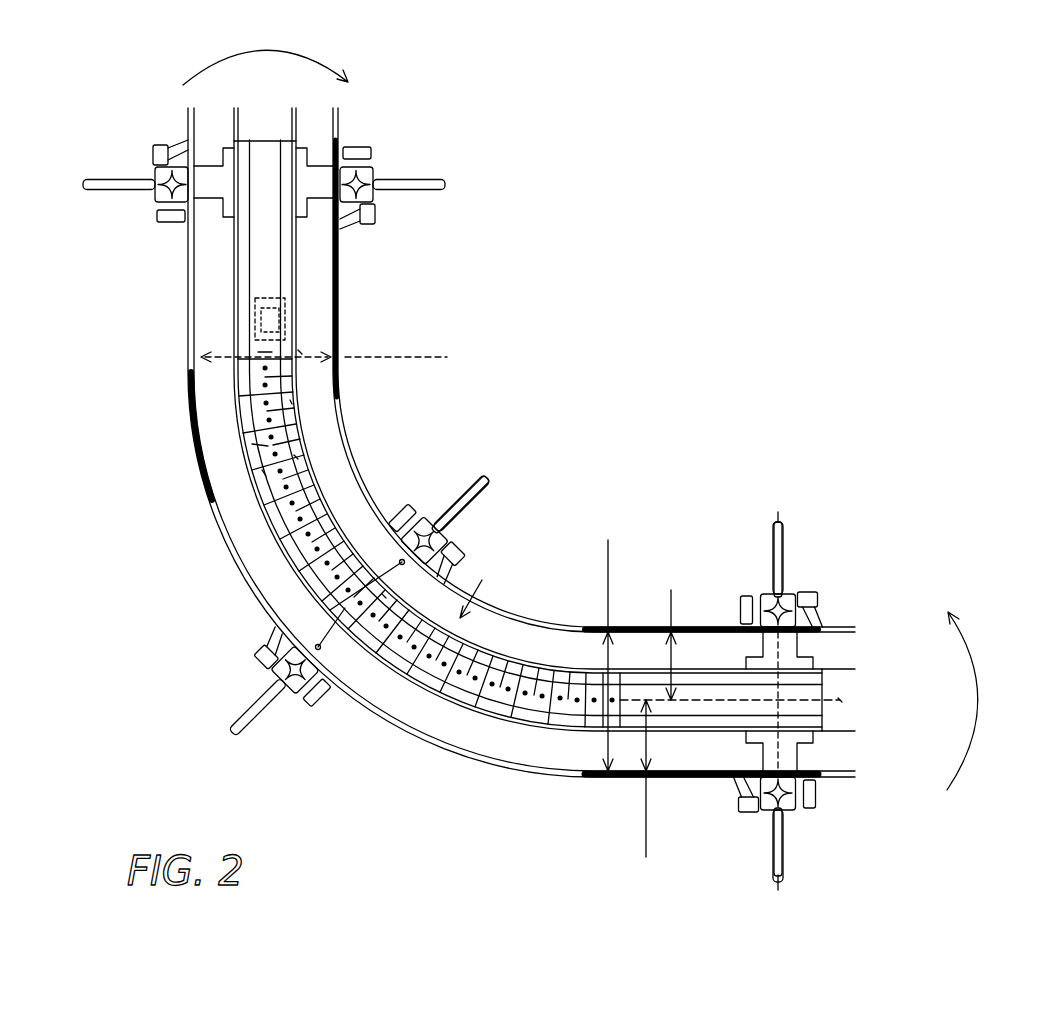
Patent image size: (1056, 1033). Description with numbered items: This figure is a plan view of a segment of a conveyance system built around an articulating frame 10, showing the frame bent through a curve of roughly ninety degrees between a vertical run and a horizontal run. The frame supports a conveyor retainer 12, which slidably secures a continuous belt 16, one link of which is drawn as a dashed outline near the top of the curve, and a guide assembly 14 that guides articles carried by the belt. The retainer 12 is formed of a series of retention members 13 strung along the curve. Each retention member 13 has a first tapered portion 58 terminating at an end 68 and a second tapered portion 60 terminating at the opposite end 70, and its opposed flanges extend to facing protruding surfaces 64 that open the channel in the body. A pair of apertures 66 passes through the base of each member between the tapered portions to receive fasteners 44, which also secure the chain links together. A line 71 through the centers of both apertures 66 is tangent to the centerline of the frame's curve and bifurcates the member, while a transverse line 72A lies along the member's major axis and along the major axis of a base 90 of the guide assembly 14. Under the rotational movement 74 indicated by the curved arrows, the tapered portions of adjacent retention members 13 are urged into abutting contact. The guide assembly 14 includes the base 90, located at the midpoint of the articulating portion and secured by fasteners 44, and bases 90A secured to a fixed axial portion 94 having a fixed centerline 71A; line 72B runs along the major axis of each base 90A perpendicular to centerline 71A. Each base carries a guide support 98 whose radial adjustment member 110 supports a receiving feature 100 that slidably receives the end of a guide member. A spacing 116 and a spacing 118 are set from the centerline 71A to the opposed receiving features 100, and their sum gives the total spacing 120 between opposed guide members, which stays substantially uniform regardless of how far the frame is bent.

The articulating frame 10 is at (390, 784).
The conveyor retainer 12 is at (418, 401).
The retention member 13 is at (300, 352).
The guide assembly 14 is at (475, 866).
The continuous belt 16 is at (289, 296).
The fasteners 44 is at (268, 350).
The first tapered portion 58 is at (290, 402).
The second tapered portion 60 is at (268, 445).
The protruding surfaces 64 is at (295, 478).
The apertures 66 is at (267, 355).
The end 68 is at (296, 457).
The end 70 is at (262, 473).
The line 71 is at (384, 596).
The fixed centerline 71A is at (840, 700).
The line 72A is at (490, 482).
The line 72B is at (782, 512).
The rotational movement 74 is at (330, 64).
The base 90 is at (278, 660).
The base 90A is at (318, 168).
The axial portion 94 is at (233, 237).
The guide support 98 is at (787, 607).
The receiving feature 100 is at (343, 235).
The radial adjustment member 110 is at (458, 505).
The spacing 116 is at (671, 590).
The spacing 118 is at (646, 857).
The total spacing 120 is at (625, 540).